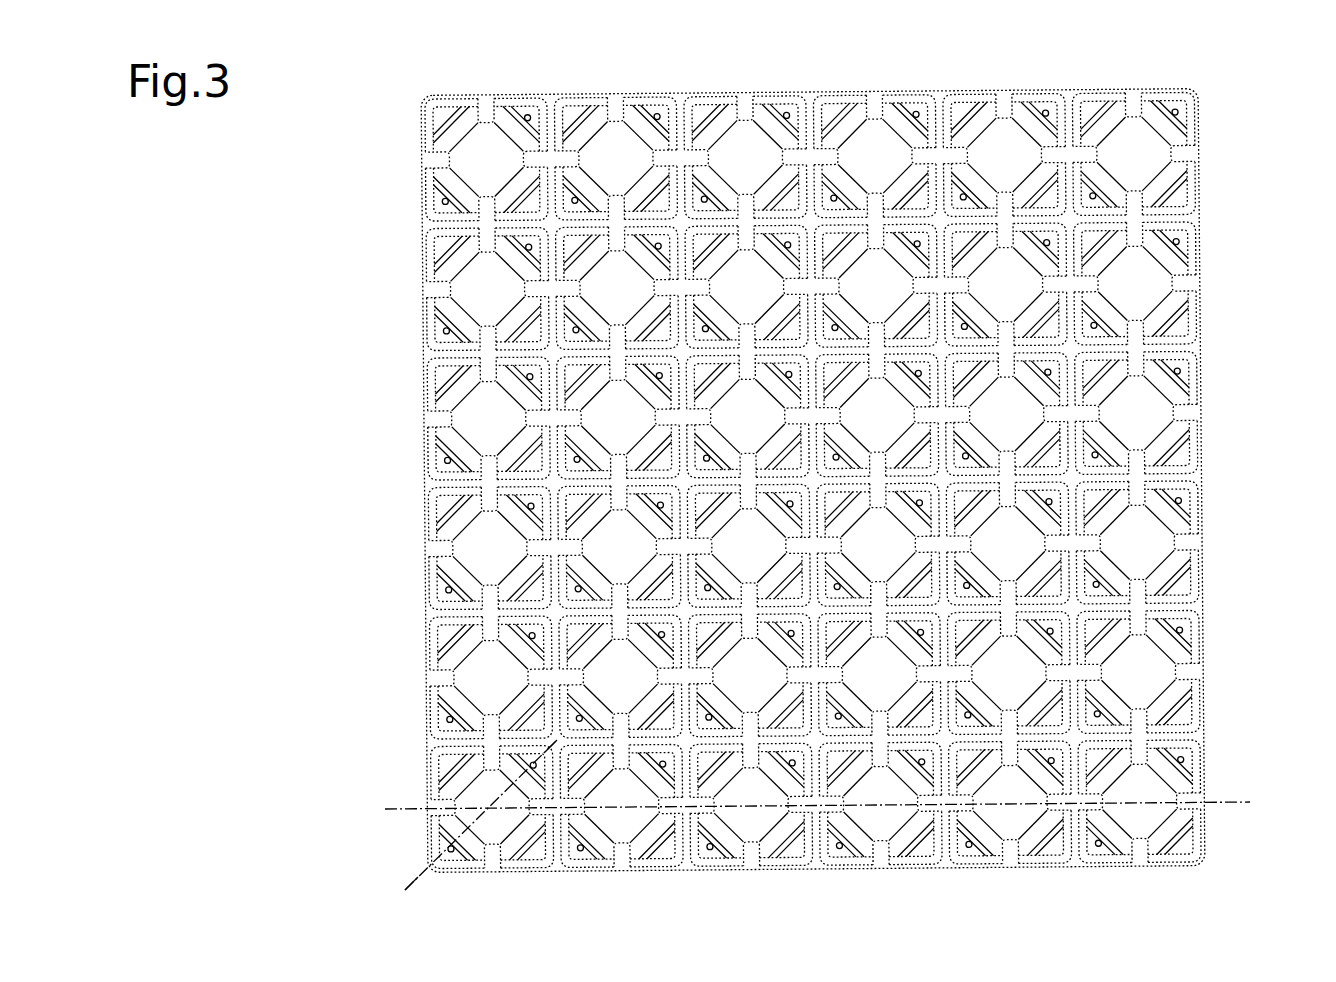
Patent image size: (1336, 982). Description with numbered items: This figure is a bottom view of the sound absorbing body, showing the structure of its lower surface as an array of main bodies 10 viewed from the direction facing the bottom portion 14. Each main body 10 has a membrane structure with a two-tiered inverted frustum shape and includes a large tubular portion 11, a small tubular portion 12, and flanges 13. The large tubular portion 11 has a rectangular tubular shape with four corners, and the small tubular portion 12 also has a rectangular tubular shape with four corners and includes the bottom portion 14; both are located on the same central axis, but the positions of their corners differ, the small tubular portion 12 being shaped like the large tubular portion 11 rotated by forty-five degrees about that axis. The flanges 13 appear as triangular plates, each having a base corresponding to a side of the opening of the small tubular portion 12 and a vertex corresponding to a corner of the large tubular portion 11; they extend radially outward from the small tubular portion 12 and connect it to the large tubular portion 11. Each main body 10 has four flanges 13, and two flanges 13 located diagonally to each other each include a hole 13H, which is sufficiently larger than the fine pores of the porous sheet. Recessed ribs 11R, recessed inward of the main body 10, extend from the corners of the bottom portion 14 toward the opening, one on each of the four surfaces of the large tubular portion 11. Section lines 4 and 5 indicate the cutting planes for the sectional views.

The main body 10 is at (812, 457).
The large tubular portion 11 is at (1193, 112).
The rib 11R is at (485, 104).
The small tubular portion 12 is at (1148, 108).
The flange 13 is at (1171, 104).
The hole 13H is at (657, 112).
The bottom portion 14 is at (1121, 132).
The section line 4- 4 is at (397, 818).
The section line 5- 5 is at (560, 745).